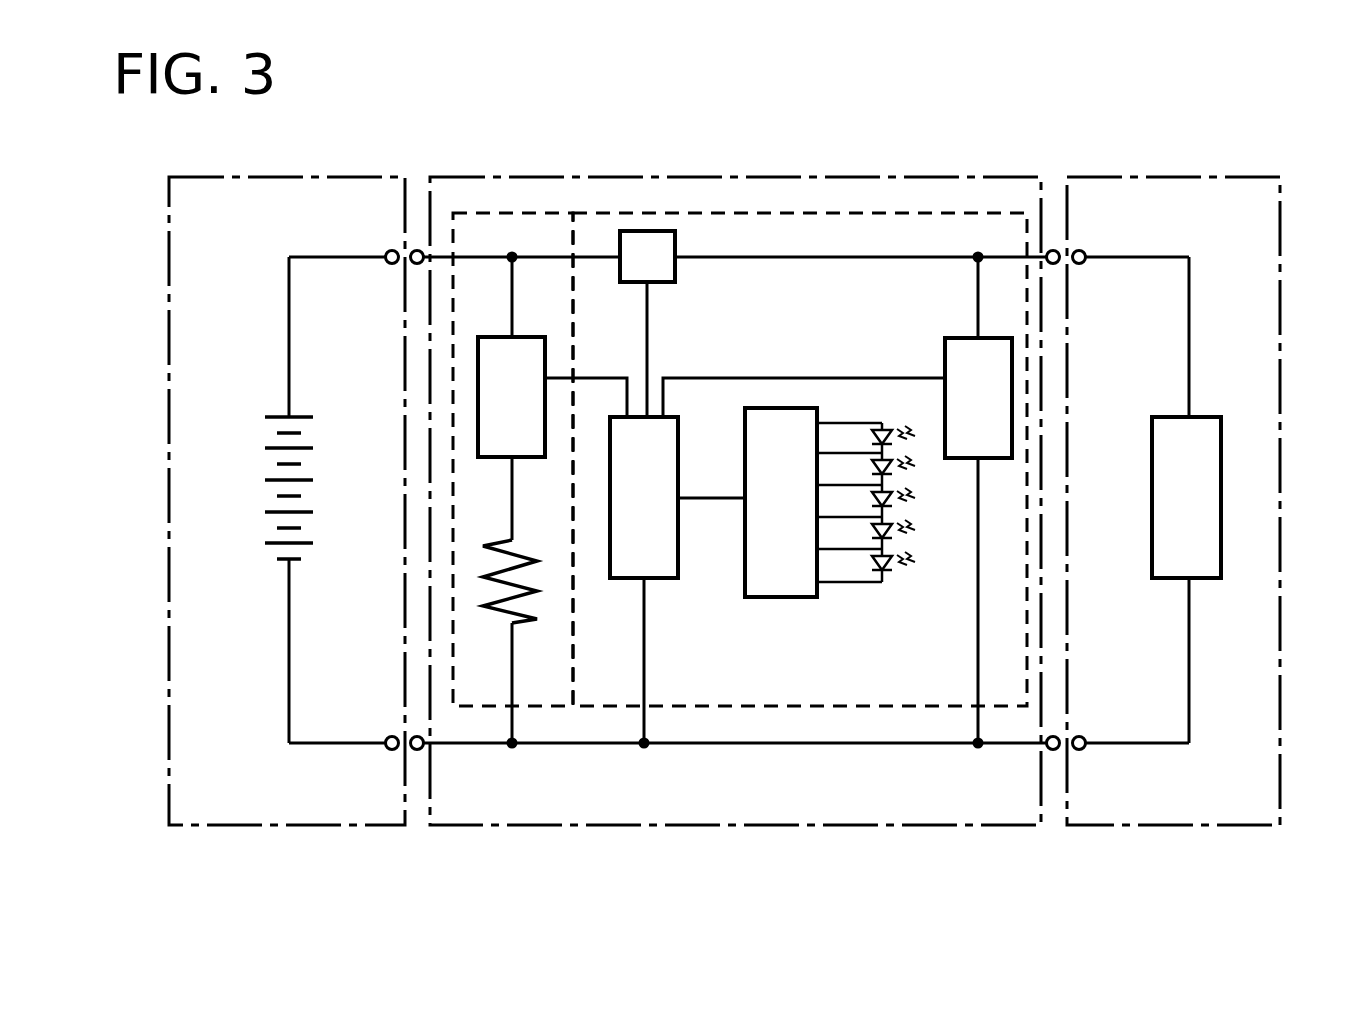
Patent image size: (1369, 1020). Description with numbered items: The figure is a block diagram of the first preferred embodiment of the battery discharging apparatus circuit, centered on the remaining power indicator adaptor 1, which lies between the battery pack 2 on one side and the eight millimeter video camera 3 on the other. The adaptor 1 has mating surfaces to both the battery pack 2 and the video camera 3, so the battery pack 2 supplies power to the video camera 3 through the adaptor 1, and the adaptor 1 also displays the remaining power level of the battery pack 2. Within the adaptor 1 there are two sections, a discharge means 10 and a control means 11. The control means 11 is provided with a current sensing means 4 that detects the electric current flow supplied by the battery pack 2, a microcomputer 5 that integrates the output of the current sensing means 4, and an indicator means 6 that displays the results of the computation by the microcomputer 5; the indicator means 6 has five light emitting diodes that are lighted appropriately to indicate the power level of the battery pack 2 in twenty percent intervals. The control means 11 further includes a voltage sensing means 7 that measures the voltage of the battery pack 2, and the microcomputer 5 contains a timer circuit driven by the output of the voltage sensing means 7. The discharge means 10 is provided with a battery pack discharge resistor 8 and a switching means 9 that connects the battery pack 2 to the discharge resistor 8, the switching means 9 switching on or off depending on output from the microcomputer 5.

The remaining power indicator adaptor 1 is at (792, 177).
The battery pack 2 is at (268, 450).
The video camera 3 is at (1205, 540).
The current sensing means 4 is at (650, 242).
The microcomputer 5 is at (653, 568).
The indicator means 6 is at (782, 585).
The voltage sensing means 7 is at (960, 352).
The discharge resistor 8 is at (530, 618).
The switching means 9 is at (528, 363).
The discharge means 10 is at (482, 212).
The control means 11 is at (940, 213).